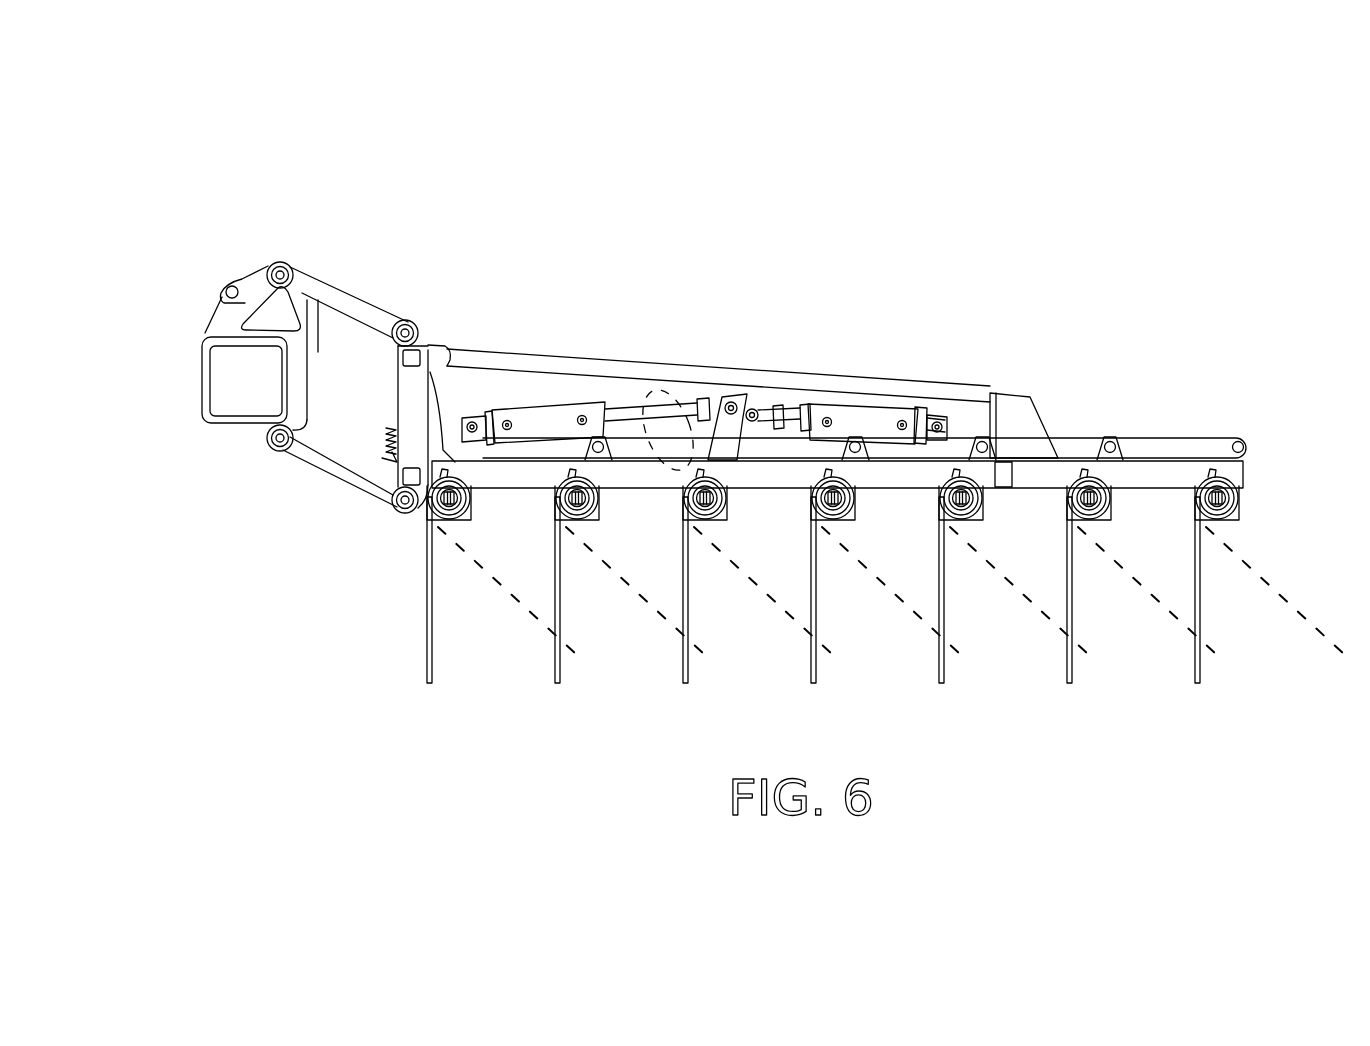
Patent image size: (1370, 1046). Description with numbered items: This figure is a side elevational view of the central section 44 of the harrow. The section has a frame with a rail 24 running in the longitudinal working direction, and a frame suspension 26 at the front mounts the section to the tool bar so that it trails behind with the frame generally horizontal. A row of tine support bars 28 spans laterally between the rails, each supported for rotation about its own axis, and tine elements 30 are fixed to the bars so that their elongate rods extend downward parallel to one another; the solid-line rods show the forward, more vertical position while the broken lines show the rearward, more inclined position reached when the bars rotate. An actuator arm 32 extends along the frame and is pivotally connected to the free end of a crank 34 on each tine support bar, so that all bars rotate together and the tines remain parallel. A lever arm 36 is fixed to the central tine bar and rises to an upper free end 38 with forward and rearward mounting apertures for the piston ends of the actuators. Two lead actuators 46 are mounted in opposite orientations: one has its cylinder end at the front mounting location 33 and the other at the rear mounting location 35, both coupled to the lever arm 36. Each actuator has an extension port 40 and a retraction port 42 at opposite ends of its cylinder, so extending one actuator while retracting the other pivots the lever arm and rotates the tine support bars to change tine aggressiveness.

The rail 24 is at (1243, 475).
The frame suspension 26 is at (310, 236).
The tine support bar 28 is at (1089, 500).
The tine element 30 is at (522, 602).
The actuator arm 32 is at (1082, 447).
The front mounting location 33 is at (470, 420).
The crank 34 is at (1113, 440).
The rear mounting location 35 is at (945, 428).
The lever arm 36 is at (747, 445).
The upper free end 38 is at (660, 388).
The extension port 40 is at (505, 420).
The retraction port 42 is at (583, 416).
The central section 44 is at (793, 148).
The lead actuator 46 is at (541, 410).